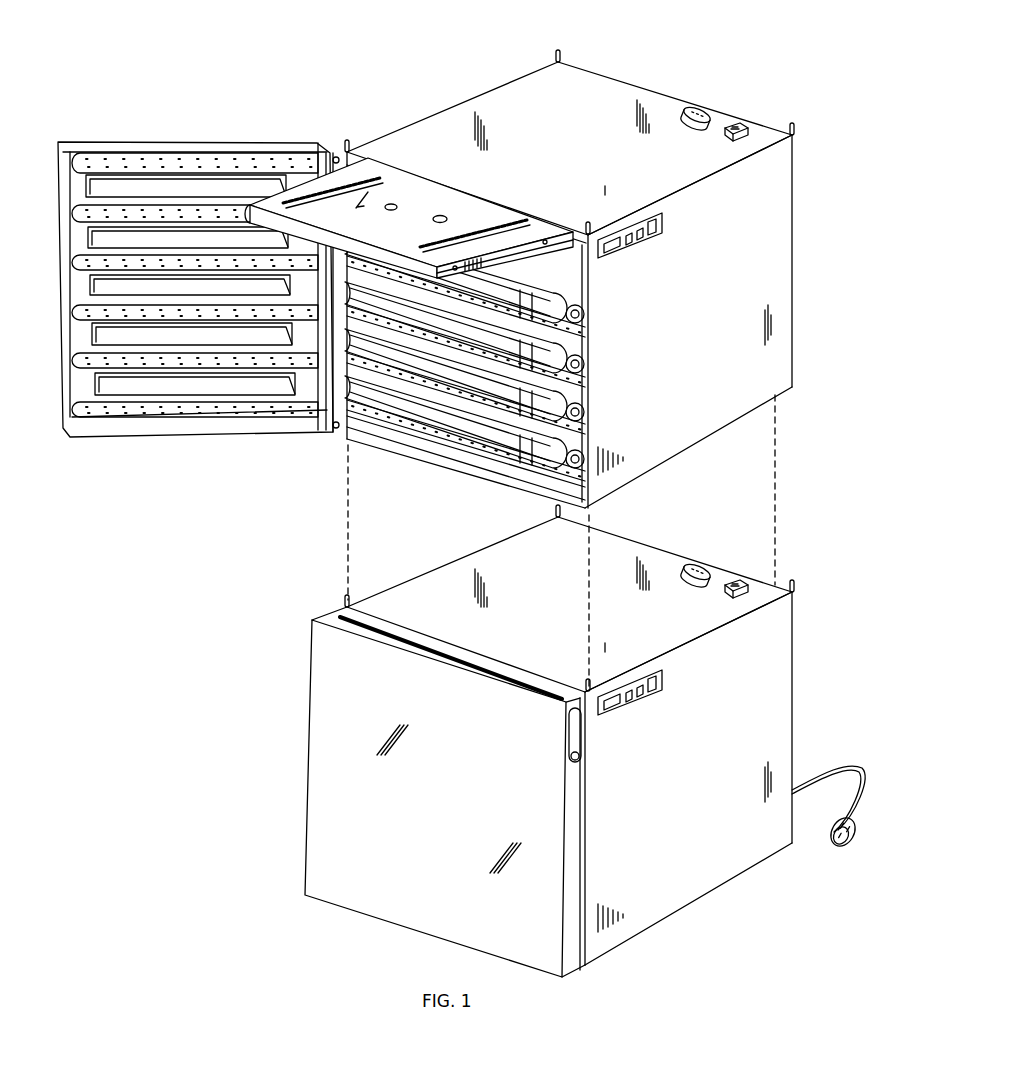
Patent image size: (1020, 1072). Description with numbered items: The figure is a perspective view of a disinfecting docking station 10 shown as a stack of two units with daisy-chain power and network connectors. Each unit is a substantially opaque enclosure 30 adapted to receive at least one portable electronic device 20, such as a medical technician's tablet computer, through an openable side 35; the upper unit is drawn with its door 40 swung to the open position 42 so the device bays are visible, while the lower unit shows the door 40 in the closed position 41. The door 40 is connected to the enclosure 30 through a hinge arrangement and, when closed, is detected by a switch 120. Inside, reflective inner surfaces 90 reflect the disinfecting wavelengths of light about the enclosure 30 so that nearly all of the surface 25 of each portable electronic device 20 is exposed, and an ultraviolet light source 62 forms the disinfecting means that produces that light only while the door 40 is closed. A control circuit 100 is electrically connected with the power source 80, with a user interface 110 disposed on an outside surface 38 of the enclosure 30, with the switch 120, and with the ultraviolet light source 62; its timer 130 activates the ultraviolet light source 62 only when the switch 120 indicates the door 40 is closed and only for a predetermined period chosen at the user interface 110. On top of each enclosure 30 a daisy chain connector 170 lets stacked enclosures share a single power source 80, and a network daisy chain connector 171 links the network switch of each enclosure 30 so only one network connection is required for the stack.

The disinfecting docking station 10 is at (224, 57).
The portable electronic device 20 is at (336, 205).
The surface 25 is at (409, 236).
The enclosure 30 is at (680, 402).
The openable side 35 is at (470, 488).
The outside surface 38 is at (734, 214).
The door 40 is at (227, 147).
The closed position 41 is at (362, 954).
The open position 42 is at (236, 546).
The ultraviolet light source 62 is at (585, 402).
The power source 80 is at (822, 841).
The reflective inner surfaces 90 is at (165, 163).
The control circuit 100 is at (665, 226).
The user interface 110 is at (700, 247).
The switch 120 is at (333, 441).
The timer 130 is at (656, 251).
The daisy chain connector 170 is at (692, 560).
The network daisy chain connector 171 is at (748, 578).